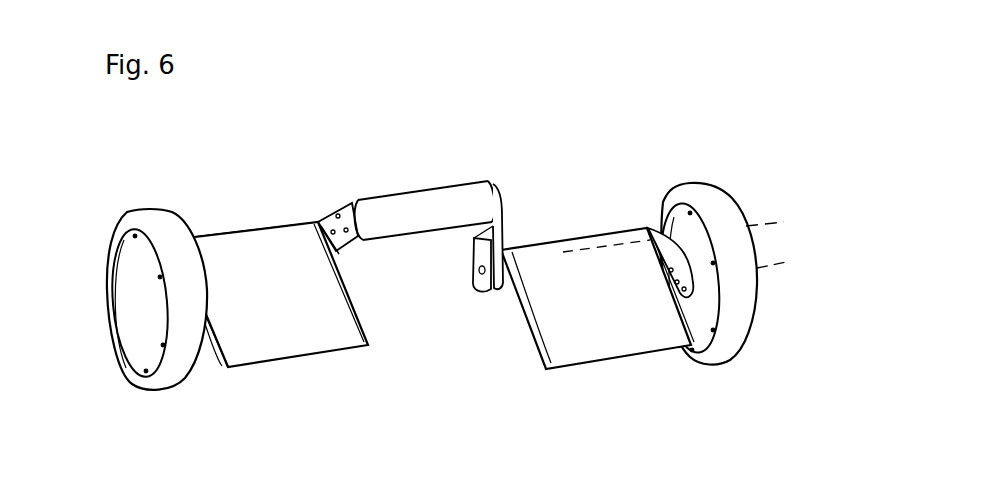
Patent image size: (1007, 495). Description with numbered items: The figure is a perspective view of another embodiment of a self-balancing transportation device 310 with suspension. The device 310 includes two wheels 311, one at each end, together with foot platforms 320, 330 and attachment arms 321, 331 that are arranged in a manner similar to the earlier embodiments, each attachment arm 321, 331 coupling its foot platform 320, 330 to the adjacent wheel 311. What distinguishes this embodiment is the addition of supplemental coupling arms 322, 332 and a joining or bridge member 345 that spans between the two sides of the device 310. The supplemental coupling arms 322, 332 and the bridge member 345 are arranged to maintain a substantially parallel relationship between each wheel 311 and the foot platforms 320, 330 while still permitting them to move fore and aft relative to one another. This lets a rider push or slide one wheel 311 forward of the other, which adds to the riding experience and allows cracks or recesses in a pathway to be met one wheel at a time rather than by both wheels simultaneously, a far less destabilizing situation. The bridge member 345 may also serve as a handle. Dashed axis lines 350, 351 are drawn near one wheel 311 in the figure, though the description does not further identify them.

The self-balancing transportation device 310 is at (568, 80).
The wheel 311 is at (118, 223).
The foot platform 320 is at (597, 298).
The attachment arm 321 is at (680, 250).
The supplemental coupling arm 322 is at (505, 228).
The foot platform 330 is at (269, 294).
The attachment arm 331 is at (222, 192).
The supplemental coupling arm 332 is at (350, 205).
The joining or bridge member 345 is at (420, 187).
The first axis 350 is at (783, 222).
The second axis 351 is at (788, 265).